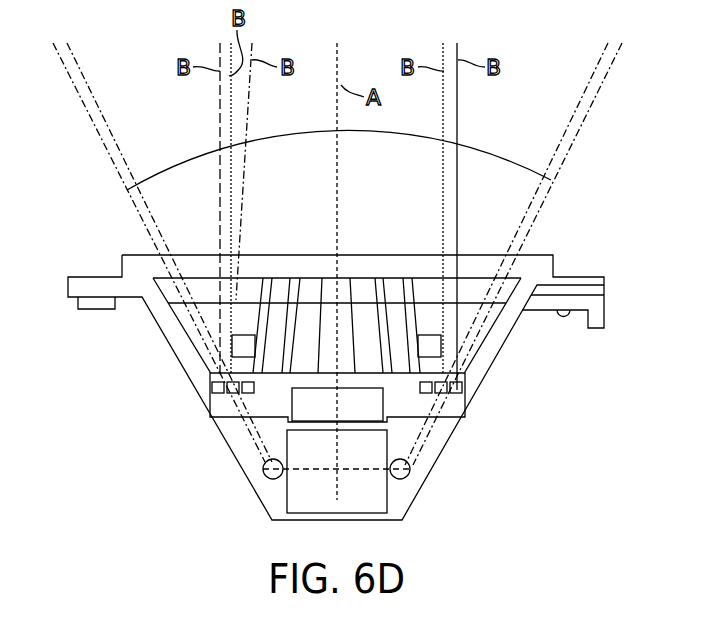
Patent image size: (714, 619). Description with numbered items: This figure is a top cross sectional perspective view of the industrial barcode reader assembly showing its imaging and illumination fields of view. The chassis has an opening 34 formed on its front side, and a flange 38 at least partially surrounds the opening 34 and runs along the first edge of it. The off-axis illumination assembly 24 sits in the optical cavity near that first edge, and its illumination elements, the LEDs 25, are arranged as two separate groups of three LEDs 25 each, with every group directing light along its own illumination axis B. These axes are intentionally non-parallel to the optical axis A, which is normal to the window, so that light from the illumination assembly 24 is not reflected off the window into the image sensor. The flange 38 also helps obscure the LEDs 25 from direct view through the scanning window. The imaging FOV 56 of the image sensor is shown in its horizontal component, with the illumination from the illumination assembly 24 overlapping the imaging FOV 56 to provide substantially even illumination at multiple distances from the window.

The illumination assembly 24 is at (472, 400).
The LEDs 25 is at (212, 387).
The opening 34 is at (395, 249).
The flange 38 is at (90, 277).
The imaging FOV 56 is at (498, 157).